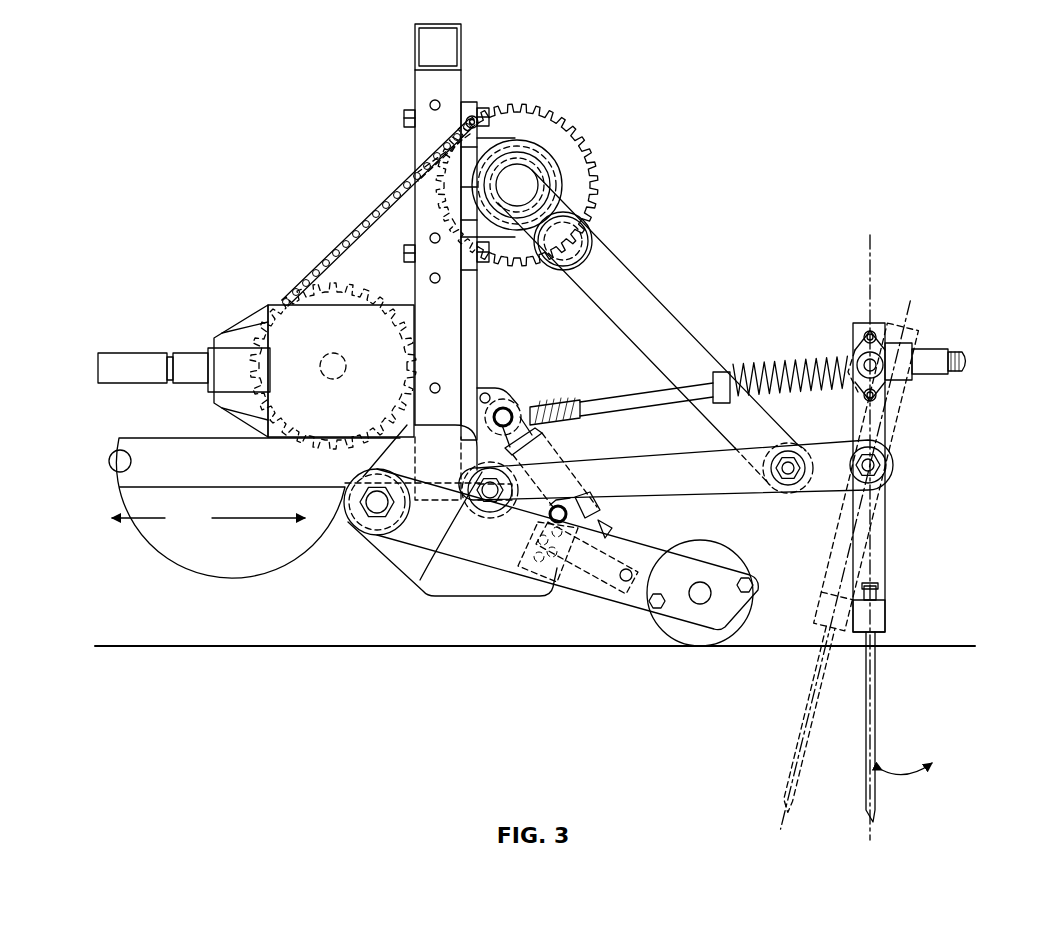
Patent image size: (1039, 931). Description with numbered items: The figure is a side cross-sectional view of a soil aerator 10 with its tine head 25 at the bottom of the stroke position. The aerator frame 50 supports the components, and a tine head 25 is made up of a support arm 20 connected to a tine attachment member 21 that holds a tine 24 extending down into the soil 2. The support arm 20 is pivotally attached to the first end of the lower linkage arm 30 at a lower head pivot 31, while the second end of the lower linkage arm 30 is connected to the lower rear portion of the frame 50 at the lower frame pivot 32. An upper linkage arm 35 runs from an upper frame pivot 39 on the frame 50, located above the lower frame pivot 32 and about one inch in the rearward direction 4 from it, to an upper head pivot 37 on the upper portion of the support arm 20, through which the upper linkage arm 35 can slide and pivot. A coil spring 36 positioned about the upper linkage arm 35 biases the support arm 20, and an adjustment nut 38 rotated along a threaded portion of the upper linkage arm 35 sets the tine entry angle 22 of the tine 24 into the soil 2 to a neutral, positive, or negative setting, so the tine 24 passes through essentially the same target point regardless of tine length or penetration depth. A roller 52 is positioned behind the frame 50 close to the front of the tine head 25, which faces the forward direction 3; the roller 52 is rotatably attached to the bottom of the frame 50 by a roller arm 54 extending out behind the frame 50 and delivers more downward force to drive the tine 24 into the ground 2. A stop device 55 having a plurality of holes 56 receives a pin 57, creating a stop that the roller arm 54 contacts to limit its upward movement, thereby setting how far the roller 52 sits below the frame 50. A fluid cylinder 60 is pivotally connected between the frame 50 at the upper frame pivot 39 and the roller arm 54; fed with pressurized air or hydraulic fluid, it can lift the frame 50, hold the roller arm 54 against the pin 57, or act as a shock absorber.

The soil aerator 10 is at (220, 134).
The soil aerator frame 50 is at (427, 93).
The forward direction 3 is at (150, 522).
The rearward horizontal direction 4 is at (266, 522).
The lower frame pivot 32 is at (400, 567).
The stop device 55 is at (432, 573).
The pin 57 is at (490, 512).
The lower linkage arm 30 is at (683, 463).
The lower head pivot 31 is at (890, 462).
The upper frame pivot 39 is at (507, 410).
The upper linkage arm 35 is at (638, 395).
The coil spring 36 is at (788, 356).
The upper head pivot 37 is at (888, 383).
The adjustment nut 38 is at (926, 352).
The support arm 20 is at (876, 536).
The tine head 25 is at (892, 506).
The tine attachment member 21 is at (858, 615).
The tine 24 is at (866, 748).
The tine entry angle 22 is at (905, 774).
The soil 2 is at (827, 683).
The fluid cylinder 60 is at (592, 518).
The holes 56 is at (548, 560).
The roller arm 54 is at (600, 578).
The roller 52 is at (696, 640).